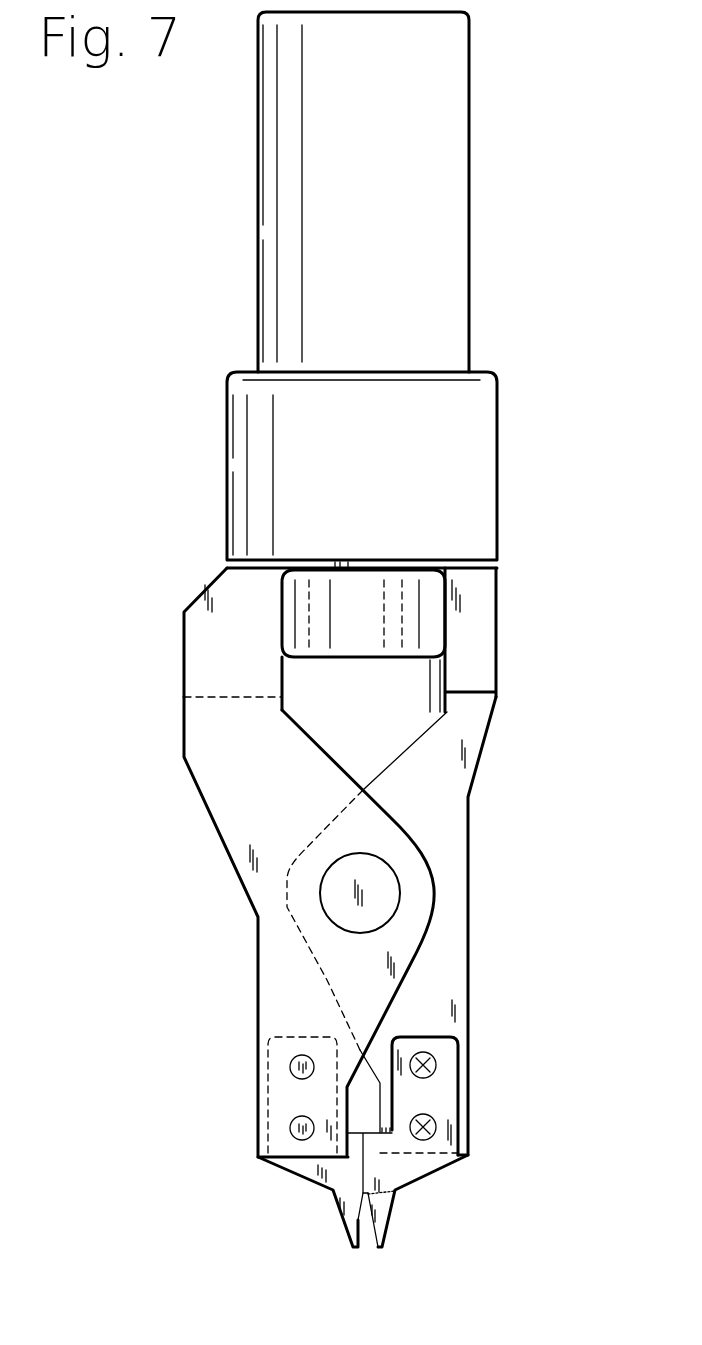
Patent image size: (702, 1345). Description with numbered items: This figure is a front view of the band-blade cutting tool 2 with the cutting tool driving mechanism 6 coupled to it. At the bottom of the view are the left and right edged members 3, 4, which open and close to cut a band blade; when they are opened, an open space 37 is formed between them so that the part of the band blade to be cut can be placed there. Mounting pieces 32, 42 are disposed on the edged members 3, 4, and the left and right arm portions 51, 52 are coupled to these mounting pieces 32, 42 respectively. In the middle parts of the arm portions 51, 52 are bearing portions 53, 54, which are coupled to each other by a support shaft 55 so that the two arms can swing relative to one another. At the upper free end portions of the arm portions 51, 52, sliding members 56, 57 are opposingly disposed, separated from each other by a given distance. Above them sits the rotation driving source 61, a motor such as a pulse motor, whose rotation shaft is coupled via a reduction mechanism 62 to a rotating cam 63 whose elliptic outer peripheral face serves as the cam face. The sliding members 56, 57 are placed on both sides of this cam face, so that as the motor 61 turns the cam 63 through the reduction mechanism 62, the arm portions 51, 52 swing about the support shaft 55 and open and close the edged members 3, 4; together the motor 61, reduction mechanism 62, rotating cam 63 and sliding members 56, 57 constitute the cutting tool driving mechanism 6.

The band-blade cutting tool 2 is at (335, 1218).
The left edged member 3 is at (297, 1172).
The right edged member 4 is at (437, 1167).
The cutting tool driving mechanism 6 is at (502, 493).
The mounting piece 32 is at (268, 1072).
The open space 37 is at (367, 1228).
The mounting piece 42 is at (453, 1062).
The left arm portion 51 is at (212, 817).
The right arm portion 52 is at (468, 827).
The bearing portion 53 is at (437, 892).
The bearing portion 54 is at (287, 887).
The support shaft 55 is at (390, 917).
The sliding member 56 is at (190, 630).
The sliding member 57 is at (492, 607).
The rotation driving source 61 is at (258, 229).
The reduction mechanism 62 is at (233, 466).
The rotating cam 63 is at (437, 650).